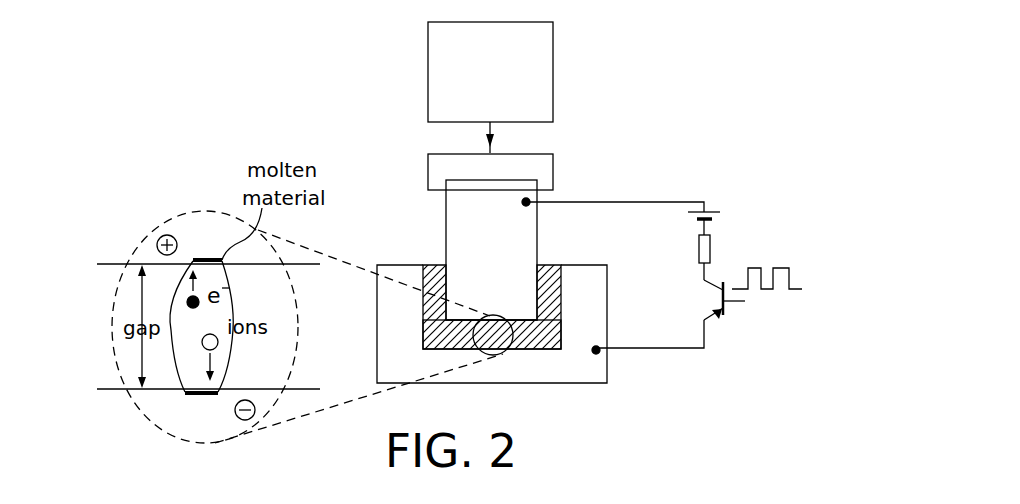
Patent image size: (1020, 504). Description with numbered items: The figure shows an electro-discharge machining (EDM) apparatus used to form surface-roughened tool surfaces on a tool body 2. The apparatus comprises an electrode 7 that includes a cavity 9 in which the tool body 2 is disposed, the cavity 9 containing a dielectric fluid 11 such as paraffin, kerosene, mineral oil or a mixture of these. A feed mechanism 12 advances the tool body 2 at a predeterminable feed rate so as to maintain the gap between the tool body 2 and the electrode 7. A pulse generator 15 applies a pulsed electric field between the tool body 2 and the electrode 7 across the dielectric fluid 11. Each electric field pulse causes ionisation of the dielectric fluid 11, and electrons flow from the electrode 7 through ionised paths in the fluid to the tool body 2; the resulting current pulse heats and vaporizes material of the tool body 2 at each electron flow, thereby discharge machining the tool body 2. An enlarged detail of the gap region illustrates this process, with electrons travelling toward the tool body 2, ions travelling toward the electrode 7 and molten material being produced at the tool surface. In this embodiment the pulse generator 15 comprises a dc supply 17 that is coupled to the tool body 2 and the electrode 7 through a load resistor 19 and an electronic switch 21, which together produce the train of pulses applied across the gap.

The tool body 2 is at (446, 203).
The electrode 7 is at (607, 297).
The cavity 9 is at (541, 343).
The dielectric fluid 11 is at (433, 265).
The feed mechanism 12 is at (555, 32).
The pulse generator 15 is at (754, 236).
The dc supply 17 is at (688, 213).
The load resistor 19 is at (699, 250).
The electronic switch 21 is at (725, 320).